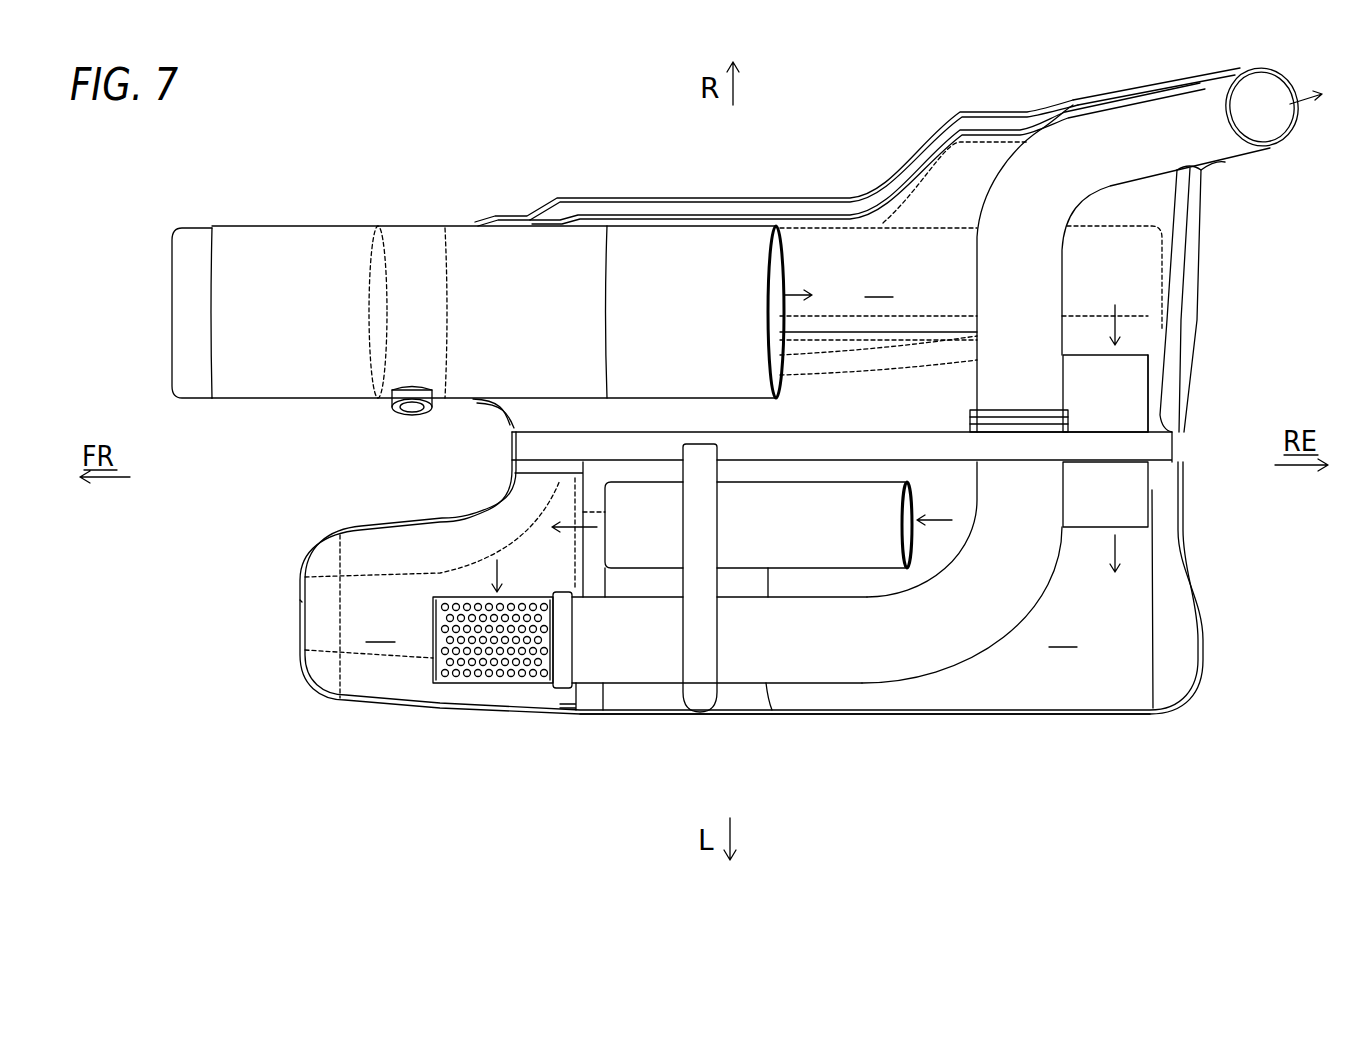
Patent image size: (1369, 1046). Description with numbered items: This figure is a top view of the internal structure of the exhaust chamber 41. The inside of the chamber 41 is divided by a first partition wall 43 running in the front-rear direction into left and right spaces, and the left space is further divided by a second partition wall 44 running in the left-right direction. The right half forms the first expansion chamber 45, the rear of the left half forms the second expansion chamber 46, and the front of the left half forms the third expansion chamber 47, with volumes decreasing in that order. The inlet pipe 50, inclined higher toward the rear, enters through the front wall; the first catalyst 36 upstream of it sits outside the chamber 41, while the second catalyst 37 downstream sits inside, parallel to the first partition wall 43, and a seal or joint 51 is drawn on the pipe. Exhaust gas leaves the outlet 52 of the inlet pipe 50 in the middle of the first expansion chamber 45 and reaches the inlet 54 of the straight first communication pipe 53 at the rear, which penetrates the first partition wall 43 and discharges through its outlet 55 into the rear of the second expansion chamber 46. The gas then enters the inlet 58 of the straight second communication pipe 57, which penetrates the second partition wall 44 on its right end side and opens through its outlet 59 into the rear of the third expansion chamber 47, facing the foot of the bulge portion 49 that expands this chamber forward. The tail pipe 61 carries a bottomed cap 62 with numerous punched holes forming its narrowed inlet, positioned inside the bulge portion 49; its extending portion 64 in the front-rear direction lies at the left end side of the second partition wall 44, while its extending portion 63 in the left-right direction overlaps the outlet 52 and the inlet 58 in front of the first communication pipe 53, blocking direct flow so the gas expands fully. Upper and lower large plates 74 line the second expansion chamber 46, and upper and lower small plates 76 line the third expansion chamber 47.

The first catalyst 36 is at (207, 242).
The second catalyst 37 is at (668, 255).
The chamber 41 is at (1225, 308).
The first partition wall 43 is at (682, 440).
The second partition wall 44 is at (697, 662).
The first expansion chamber 45 is at (971, 300).
The second expansion chamber 46 is at (746, 599).
The third expansion chamber 47 is at (433, 655).
The bulge portion 49 is at (300, 602).
The inlet pipe 50 is at (372, 222).
The seal ring 51 is at (446, 228).
The outlet of the inlet pipe 52 is at (790, 255).
The first communication pipe 53 is at (1128, 408).
The inlet of the first communication pipe 54 is at (1128, 352).
The outlet of the first communication pipe 55 is at (1133, 530).
The second communication pipe 57 is at (805, 505).
The inlet of the second communication pipe 58 is at (917, 500).
The outlet of the second communication pipe 59 is at (583, 510).
The tail pipe 61 is at (996, 620).
The cap 62 is at (472, 685).
The extending portion of the tail pipe in the left-right direction 63 is at (1037, 303).
The extending portion of the tail pipe in the front-rear direction 64 is at (797, 662).
The large plates 74 is at (1097, 688).
The small plates 76 is at (632, 693).